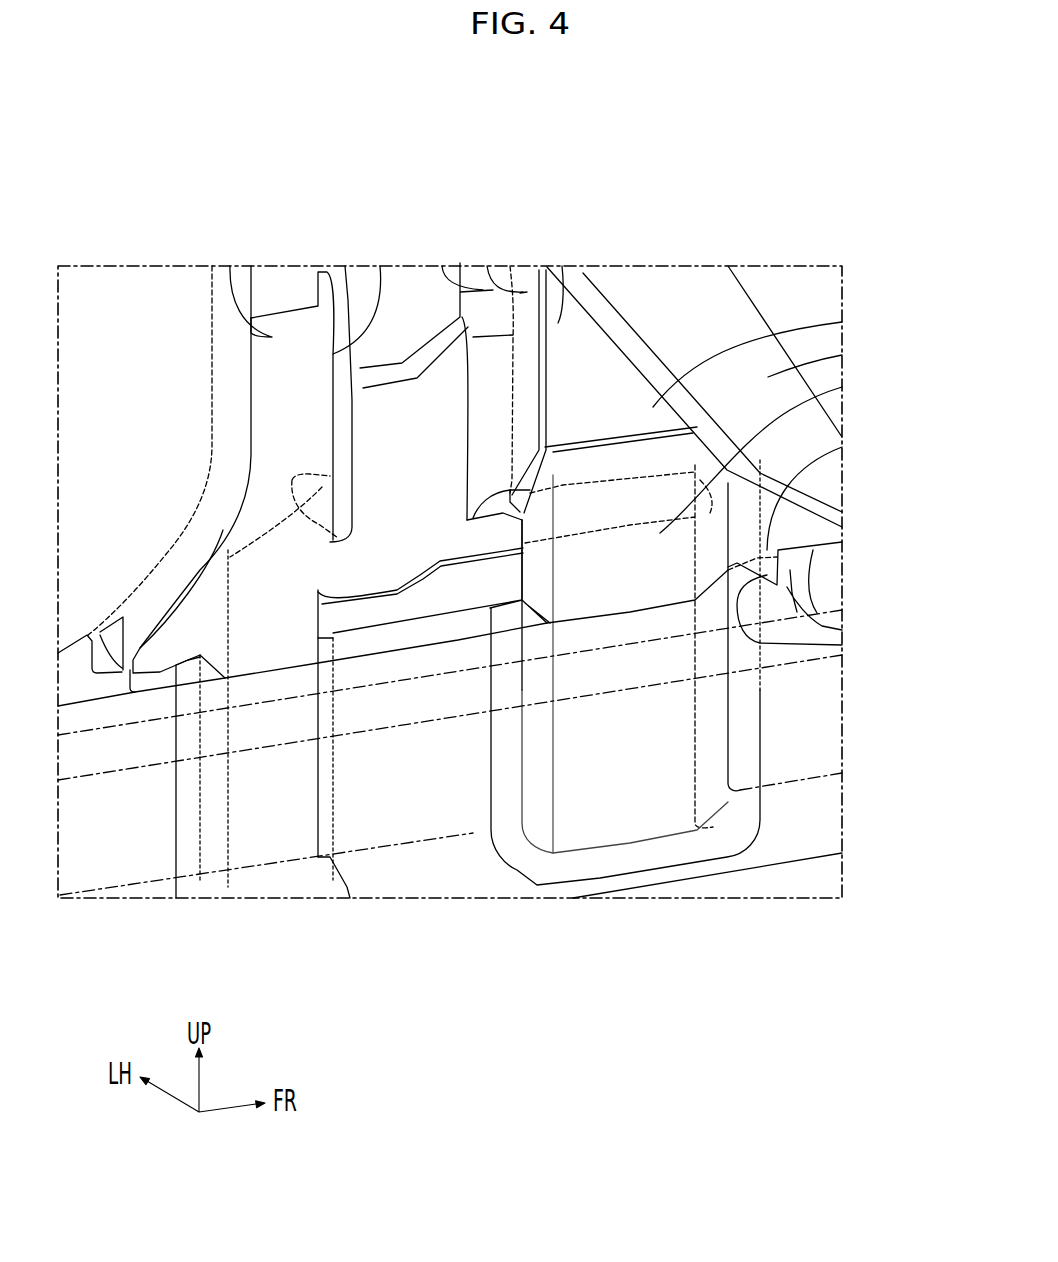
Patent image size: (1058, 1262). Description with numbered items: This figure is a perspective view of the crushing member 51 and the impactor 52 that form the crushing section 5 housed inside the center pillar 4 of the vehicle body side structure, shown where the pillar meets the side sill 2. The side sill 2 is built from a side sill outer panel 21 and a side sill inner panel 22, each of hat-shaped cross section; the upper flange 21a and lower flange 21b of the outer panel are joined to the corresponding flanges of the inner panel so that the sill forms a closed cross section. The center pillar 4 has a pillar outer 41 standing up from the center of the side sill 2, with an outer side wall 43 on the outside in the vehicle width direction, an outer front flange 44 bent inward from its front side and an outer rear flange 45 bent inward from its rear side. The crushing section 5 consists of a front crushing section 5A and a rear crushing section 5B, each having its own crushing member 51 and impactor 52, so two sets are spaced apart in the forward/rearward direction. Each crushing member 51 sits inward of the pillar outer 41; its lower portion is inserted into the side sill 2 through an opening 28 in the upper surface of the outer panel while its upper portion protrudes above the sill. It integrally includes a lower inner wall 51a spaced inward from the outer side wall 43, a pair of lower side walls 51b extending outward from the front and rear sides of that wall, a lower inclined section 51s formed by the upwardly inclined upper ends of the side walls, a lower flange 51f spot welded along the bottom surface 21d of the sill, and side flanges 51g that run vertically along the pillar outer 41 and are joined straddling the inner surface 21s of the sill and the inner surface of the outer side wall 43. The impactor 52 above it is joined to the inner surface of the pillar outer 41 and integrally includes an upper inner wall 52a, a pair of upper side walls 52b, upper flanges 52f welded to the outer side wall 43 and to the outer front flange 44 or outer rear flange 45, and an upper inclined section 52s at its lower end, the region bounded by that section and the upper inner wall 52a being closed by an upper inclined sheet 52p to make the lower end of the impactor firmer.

The side sill 2 is at (498, 598).
The center pillar 4 is at (777, 243).
The crushing section 5 is at (546, 332).
The front crushing section 5A is at (677, 351).
The rear crushing section 5B is at (292, 332).
The side sill outer panel 21 is at (835, 483).
The upper flange 21a is at (499, 638).
The lower flange 21b is at (757, 872).
The bottom surface 21d is at (501, 834).
The inner surface 21s is at (113, 801).
The side sill inner panel 22 is at (816, 528).
The opening 28 is at (832, 619).
The pillar outer 41 is at (774, 281).
The outer side wall 43 is at (436, 280).
The outer front flange 44 is at (848, 349).
The outer rear flange 45 is at (158, 451).
The crushing member 51 is at (520, 677).
The lower inner wall 51a is at (508, 506).
The lower side walls 51b is at (559, 812).
The lower flange 51f is at (369, 810).
The side flanges 51g is at (556, 723).
The lower inclined section 51s is at (380, 478).
The impactor 52 is at (530, 469).
The upper inner wall 52a is at (387, 231).
The upper side walls 52b is at (428, 239).
The upper flanges 52f is at (413, 333).
The upper inclined sheet 52p is at (619, 646).
The upper inclined section 52s is at (434, 563).